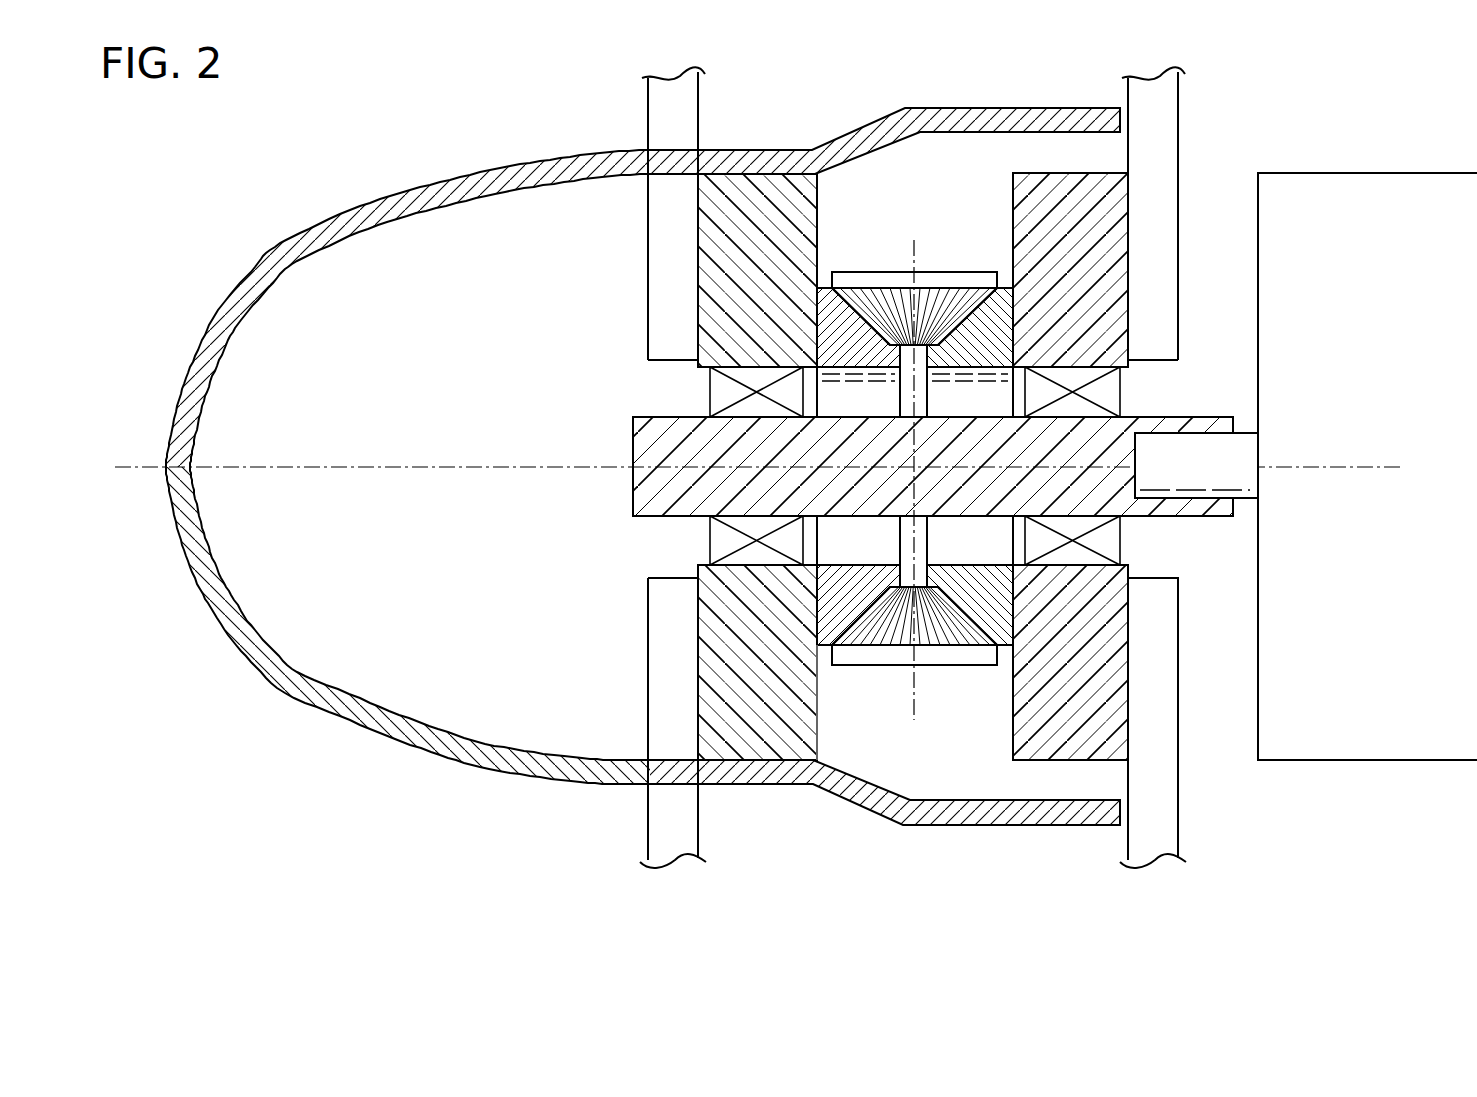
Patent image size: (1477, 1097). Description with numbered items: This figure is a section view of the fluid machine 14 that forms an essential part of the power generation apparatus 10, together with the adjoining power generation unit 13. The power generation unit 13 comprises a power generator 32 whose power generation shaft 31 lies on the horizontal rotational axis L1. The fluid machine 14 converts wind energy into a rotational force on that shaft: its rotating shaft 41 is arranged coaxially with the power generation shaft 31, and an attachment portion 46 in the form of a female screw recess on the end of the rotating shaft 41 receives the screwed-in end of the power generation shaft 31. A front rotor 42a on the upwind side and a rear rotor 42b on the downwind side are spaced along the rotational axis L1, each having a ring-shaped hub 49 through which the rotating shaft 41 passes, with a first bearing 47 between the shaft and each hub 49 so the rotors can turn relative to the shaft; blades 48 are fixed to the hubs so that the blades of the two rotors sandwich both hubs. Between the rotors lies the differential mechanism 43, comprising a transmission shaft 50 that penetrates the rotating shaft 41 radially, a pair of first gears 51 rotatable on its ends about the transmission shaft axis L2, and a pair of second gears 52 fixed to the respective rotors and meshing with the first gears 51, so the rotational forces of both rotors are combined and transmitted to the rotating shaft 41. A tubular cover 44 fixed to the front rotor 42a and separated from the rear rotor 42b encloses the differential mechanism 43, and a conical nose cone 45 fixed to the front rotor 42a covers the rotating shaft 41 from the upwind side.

The power generation apparatus 10 is at (296, 168).
The power generation unit 13 is at (1343, 406).
The fluid machine 14 is at (643, 503).
The power generation shaft 31 is at (1210, 445).
The power generator 32 is at (1330, 190).
The rotating shaft 41 is at (640, 512).
The front rotor 42a is at (758, 920).
The rear rotor 42b is at (1147, 920).
The differential mechanism 43 is at (861, 730).
The cover 44 is at (838, 785).
The nose cone 45 is at (270, 682).
The attachment portion 46 is at (1260, 450).
The first bearing 47 is at (705, 530).
The blade 48 is at (683, 845).
The hub 49 is at (752, 750).
The transmission shaft 50 is at (957, 462).
The first gear 51 is at (958, 283).
The second gear 52 is at (830, 300).
The rotational axis L1 is at (1405, 458).
The axis of the transmission shaft L2 is at (920, 725).